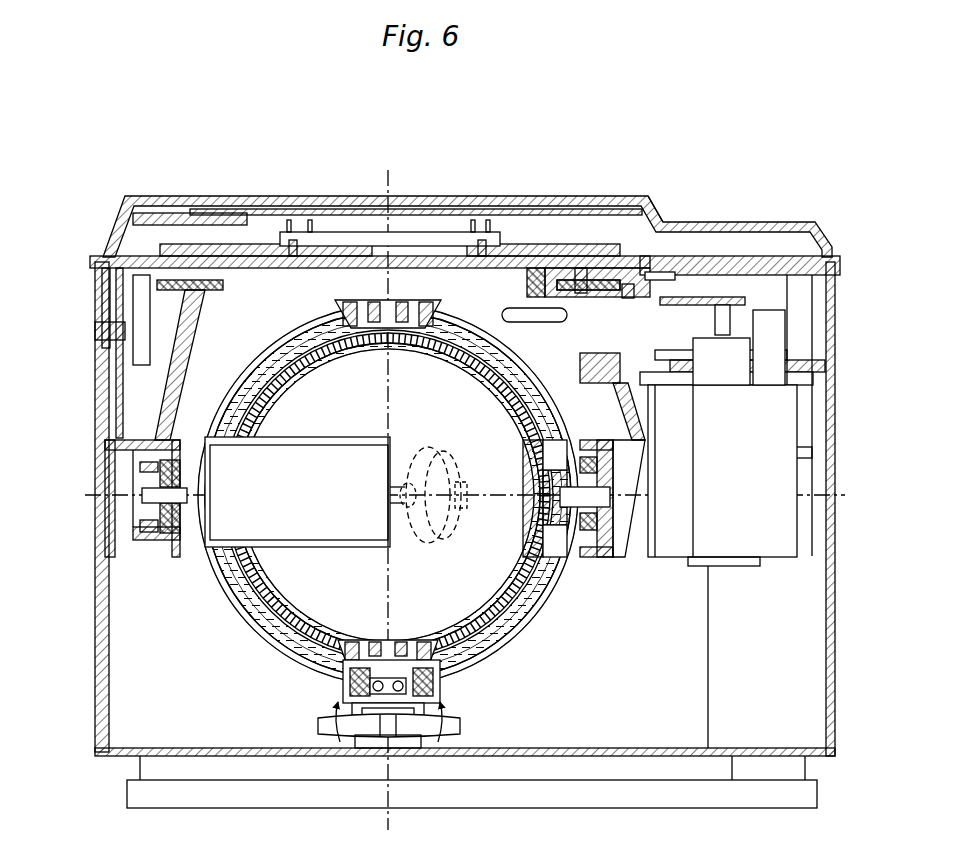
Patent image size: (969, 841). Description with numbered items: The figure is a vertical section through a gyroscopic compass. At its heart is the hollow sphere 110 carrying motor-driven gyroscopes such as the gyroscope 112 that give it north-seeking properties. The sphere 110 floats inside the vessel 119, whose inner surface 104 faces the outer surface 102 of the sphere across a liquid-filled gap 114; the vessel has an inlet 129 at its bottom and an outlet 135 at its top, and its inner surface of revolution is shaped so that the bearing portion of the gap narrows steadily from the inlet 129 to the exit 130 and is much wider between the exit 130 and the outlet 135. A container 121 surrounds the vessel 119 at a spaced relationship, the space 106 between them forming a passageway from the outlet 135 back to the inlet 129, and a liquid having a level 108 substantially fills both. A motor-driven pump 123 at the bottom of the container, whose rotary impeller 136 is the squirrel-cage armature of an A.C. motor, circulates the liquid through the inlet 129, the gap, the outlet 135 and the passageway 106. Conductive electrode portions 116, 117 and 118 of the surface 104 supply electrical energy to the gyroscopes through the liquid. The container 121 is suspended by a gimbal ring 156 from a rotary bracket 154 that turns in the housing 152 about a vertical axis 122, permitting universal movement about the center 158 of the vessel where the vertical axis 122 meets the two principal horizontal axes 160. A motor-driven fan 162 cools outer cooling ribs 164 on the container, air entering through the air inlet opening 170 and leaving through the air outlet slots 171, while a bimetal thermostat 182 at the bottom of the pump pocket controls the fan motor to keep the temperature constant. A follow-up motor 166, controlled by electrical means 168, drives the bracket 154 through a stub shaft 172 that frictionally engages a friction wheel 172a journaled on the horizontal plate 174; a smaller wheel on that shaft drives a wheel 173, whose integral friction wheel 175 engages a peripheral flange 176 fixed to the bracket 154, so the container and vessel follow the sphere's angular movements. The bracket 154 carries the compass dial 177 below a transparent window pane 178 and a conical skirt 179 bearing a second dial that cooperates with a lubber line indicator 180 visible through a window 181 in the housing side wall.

The outer surface of the sphere 102 is at (388, 495).
The inner surface of the vessel 104 is at (388, 495).
The space (passageway) 106 is at (378, 492).
The liquid level 108 is at (390, 269).
The hollow sphere 110 is at (393, 440).
The motor-driven gyroscope 112 is at (425, 513).
The gap 114 is at (388, 495).
The conductive electrode portion 116 is at (410, 360).
The conductive electrode portion 117 is at (602, 479).
The conductive electrode portion 118 is at (375, 627).
The vessel 119 is at (521, 507).
The container 121 is at (388, 489).
The vertical axis 122 is at (465, 493).
The motor-driven pump 123 is at (442, 698).
The inlet 129 is at (389, 627).
The exit 130 is at (519, 498).
The outlet 135 is at (388, 352).
The rotary impeller 136 is at (344, 681).
The housing 152 is at (426, 535).
The rotary bracket 154 is at (402, 342).
The gimbal ring 156 is at (163, 475).
The center of the vessel 158 is at (372, 492).
The principal horizontal axes 160 is at (297, 492).
The motor-driven fan 162 is at (426, 731).
The outer cooling ribs 164 is at (378, 495).
The follow-up motor 166 is at (728, 502).
The electrical means 168 is at (669, 657).
The air inlet opening 170 is at (840, 509).
The air outlet slots 171 is at (695, 383).
The stub shaft 172 is at (732, 345).
The friction wheel 172a is at (722, 291).
The wheel 173 is at (647, 301).
The horizontal plate 174 is at (707, 233).
The friction wheel 175 is at (684, 198).
The peripheral flange 176 is at (554, 319).
The compass dial 177 is at (190, 185).
The transparent window pane 178 is at (467, 193).
The conical skirt 179 is at (186, 322).
The lubber line indicator 180 is at (333, 347).
The window 181 is at (68, 366).
The bimetal thermostat 182 is at (355, 719).